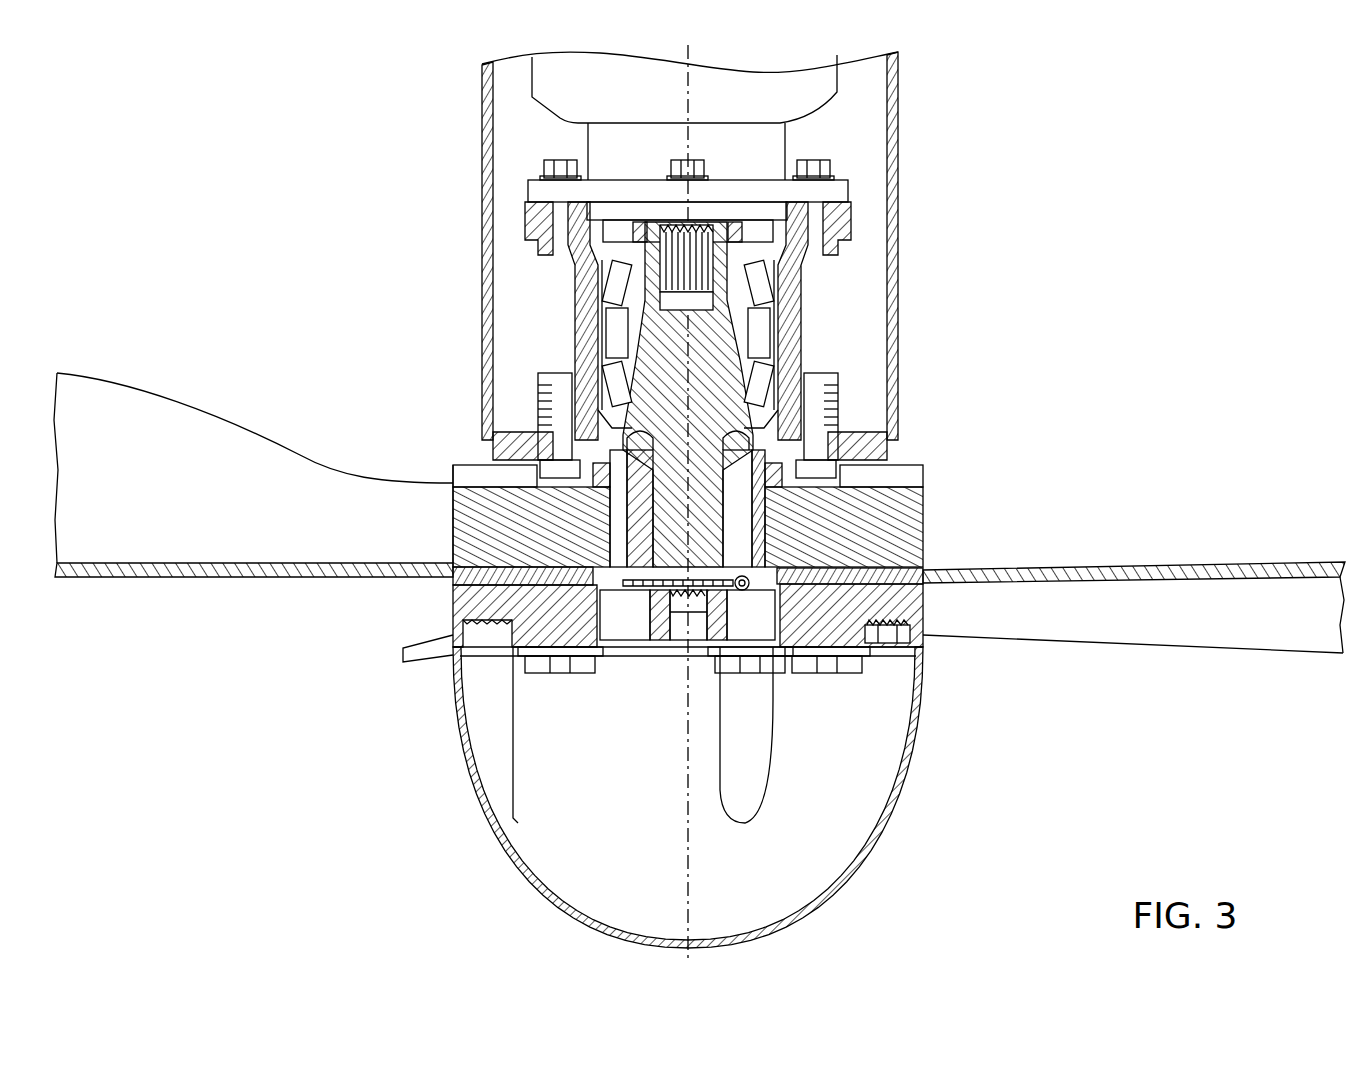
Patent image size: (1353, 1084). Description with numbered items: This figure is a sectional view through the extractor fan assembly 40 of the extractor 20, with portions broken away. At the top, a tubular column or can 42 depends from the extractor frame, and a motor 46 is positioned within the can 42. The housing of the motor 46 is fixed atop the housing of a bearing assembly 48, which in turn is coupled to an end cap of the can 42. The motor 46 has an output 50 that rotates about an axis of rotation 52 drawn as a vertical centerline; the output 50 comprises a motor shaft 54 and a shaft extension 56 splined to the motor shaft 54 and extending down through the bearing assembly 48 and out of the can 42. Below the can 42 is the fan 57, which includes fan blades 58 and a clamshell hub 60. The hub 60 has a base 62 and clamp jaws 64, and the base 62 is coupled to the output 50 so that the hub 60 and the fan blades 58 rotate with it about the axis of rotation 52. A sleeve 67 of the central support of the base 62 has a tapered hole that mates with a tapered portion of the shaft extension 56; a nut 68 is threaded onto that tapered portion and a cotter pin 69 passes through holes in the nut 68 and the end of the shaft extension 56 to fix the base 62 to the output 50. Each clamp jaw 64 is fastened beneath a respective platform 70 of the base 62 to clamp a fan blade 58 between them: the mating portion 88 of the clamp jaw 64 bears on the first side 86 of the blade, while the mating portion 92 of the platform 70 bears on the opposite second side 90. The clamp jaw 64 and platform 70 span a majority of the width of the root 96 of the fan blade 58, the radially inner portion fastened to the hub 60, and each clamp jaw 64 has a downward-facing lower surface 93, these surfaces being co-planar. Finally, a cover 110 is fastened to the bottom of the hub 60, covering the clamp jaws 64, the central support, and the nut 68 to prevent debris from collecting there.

The extractor 20 is at (1188, 158).
The extractor fan assembly 40 is at (1160, 363).
The tubular column or can 42 is at (482, 320).
The motor 46 is at (777, 90).
The bearing assembly 48 is at (583, 312).
The output 50 is at (700, 315).
The axis of rotation 52 is at (688, 858).
The motor shaft 54 is at (680, 230).
The shaft extension 56 is at (672, 365).
The fan 57 is at (308, 725).
The fan blades 58 is at (165, 552).
The clamshell hub 60 is at (1010, 411).
The base 62 is at (960, 516).
The clamp jaws 64 is at (585, 674).
The sleeve 67 is at (757, 505).
The nut 68 is at (660, 648).
The cotter pin 69 is at (740, 590).
The platform 70 is at (457, 518).
The first side 86 is at (267, 577).
The mating portion of the clamp jaw 88 is at (452, 553).
The second side 90 is at (243, 563).
The mating portion of the platform 92 is at (450, 608).
The lower surface 93 is at (545, 657).
The root 96 is at (450, 595).
The cover 110 is at (888, 858).